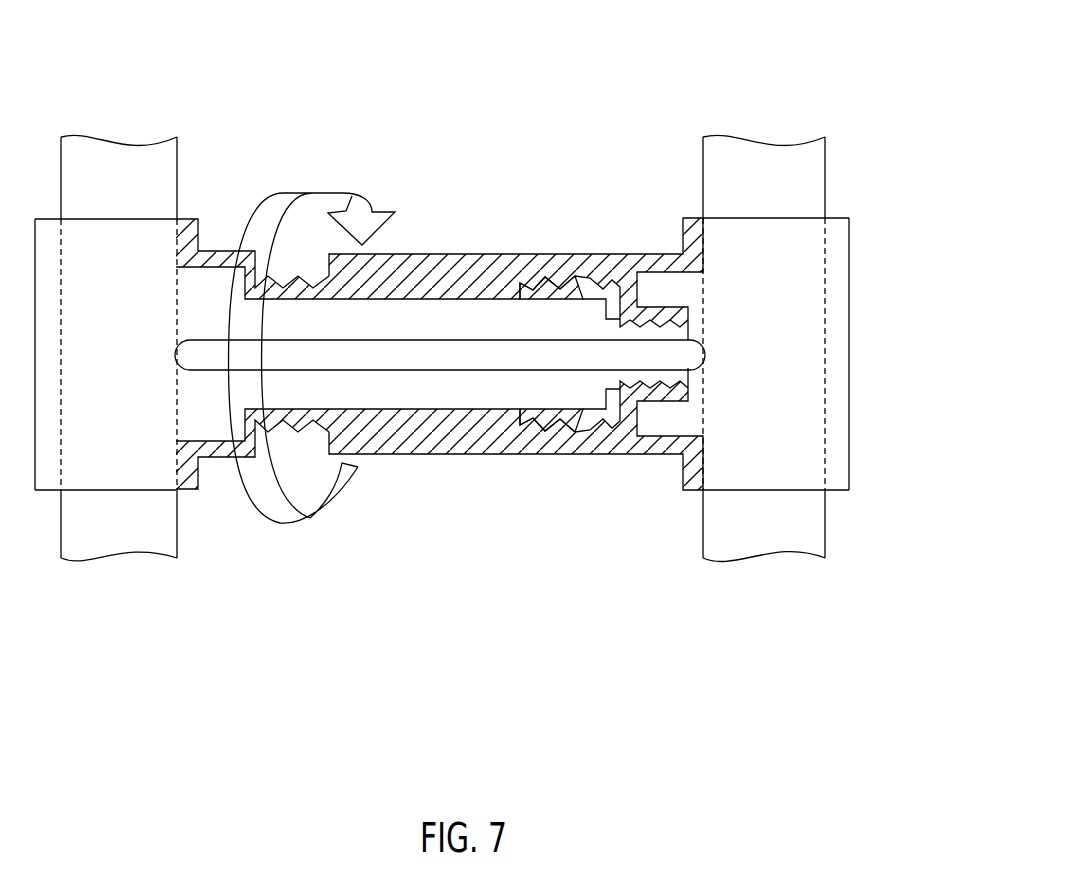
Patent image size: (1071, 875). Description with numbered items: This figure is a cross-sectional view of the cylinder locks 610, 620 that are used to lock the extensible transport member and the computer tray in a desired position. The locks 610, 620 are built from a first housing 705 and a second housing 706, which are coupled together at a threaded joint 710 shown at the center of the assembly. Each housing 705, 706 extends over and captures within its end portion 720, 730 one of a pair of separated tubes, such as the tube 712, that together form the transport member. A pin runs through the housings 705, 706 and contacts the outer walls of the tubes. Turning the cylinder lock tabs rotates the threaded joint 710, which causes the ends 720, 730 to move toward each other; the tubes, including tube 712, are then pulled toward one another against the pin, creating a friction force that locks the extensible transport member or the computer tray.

The cylinder lock 610 is at (428, 138).
The cylinder lock 620 is at (440, 355).
The first housing 705 is at (215, 455).
The second housing 706 is at (578, 450).
The threaded joint 710 is at (530, 272).
The tube 712 is at (773, 553).
The end portion 720 is at (178, 200).
The end portion 730 is at (833, 203).